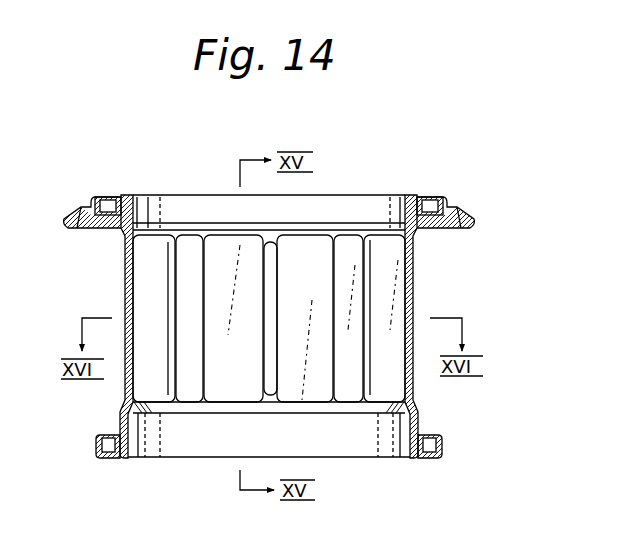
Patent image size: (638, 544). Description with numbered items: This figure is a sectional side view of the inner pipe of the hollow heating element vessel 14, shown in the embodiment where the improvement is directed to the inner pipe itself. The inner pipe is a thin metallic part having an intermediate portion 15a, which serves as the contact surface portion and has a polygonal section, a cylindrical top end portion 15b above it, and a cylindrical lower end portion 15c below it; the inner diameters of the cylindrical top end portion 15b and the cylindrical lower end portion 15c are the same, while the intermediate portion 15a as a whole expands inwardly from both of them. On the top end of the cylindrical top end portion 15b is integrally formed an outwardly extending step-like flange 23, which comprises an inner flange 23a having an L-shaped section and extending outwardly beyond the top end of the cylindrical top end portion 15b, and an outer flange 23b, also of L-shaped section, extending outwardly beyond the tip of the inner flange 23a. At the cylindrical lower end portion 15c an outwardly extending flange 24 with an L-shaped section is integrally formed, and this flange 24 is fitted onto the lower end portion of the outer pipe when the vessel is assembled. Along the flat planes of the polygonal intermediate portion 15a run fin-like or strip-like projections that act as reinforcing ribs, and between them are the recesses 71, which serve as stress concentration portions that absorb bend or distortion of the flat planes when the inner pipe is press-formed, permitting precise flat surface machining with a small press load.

The hollow heating element vessel 14 is at (118, 462).
The intermediate portion 15a is at (413, 290).
The cylindrical top end portion 15b is at (415, 212).
The cylindrical lower end portion 15c is at (412, 430).
The step-like flange 23 is at (447, 200).
The inner flange 23a is at (428, 198).
The outer flange 23b is at (474, 218).
The flange 24 is at (441, 443).
The recesses 71 is at (272, 288).